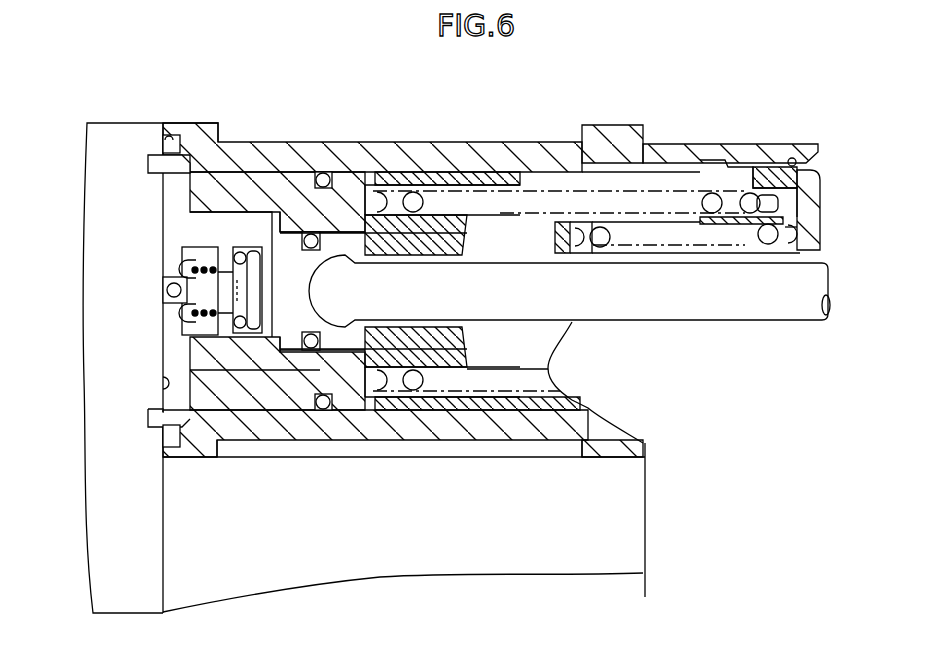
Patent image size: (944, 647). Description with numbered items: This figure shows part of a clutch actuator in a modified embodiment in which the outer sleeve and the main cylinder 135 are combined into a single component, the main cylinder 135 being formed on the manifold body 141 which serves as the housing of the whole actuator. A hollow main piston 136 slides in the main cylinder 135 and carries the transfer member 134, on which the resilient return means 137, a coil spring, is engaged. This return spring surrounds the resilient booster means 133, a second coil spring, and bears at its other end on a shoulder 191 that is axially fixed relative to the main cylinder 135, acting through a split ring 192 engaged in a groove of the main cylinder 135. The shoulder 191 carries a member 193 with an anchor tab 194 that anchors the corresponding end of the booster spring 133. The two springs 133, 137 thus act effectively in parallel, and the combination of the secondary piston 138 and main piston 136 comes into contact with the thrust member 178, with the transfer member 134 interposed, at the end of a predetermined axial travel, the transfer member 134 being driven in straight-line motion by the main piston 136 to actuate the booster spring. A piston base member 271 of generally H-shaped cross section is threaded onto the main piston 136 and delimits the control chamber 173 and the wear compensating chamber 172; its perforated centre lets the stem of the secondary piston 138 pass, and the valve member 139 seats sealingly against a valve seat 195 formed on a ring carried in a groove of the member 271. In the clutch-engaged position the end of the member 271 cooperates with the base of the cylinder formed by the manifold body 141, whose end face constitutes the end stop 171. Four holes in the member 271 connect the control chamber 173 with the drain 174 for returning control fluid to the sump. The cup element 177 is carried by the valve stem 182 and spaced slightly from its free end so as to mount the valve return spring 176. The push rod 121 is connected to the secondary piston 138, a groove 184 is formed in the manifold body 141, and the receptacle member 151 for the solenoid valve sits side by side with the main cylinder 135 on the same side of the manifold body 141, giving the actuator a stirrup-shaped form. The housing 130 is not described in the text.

The push rod 121 is at (808, 267).
The housing 130 is at (306, 118).
The resilient booster means 133 is at (600, 222).
The transfer member 134 is at (415, 186).
The main cylinder 135 is at (698, 143).
The main piston 136 is at (368, 216).
The resilient return means 137 is at (495, 175).
The secondary piston 138 is at (326, 170).
The valve member 139 is at (243, 250).
The manifold body 141 is at (119, 120).
The receptacle member 151 is at (647, 490).
The end stop 171 is at (170, 378).
The wear compensating chamber 172 is at (263, 245).
The control chamber 173 is at (168, 307).
The drain 174 is at (362, 188).
The valve return spring 176 is at (180, 270).
The cup element 177 is at (180, 258).
The thrust member 178 is at (570, 222).
The valve stem 182 is at (175, 315).
The groove 184 is at (163, 127).
The shoulder 191 is at (822, 187).
The split ring 192 is at (793, 157).
The member 193 is at (729, 262).
The anchor tab 194 is at (788, 262).
The valve seat 195 is at (226, 245).
The piston base member 271 is at (210, 212).